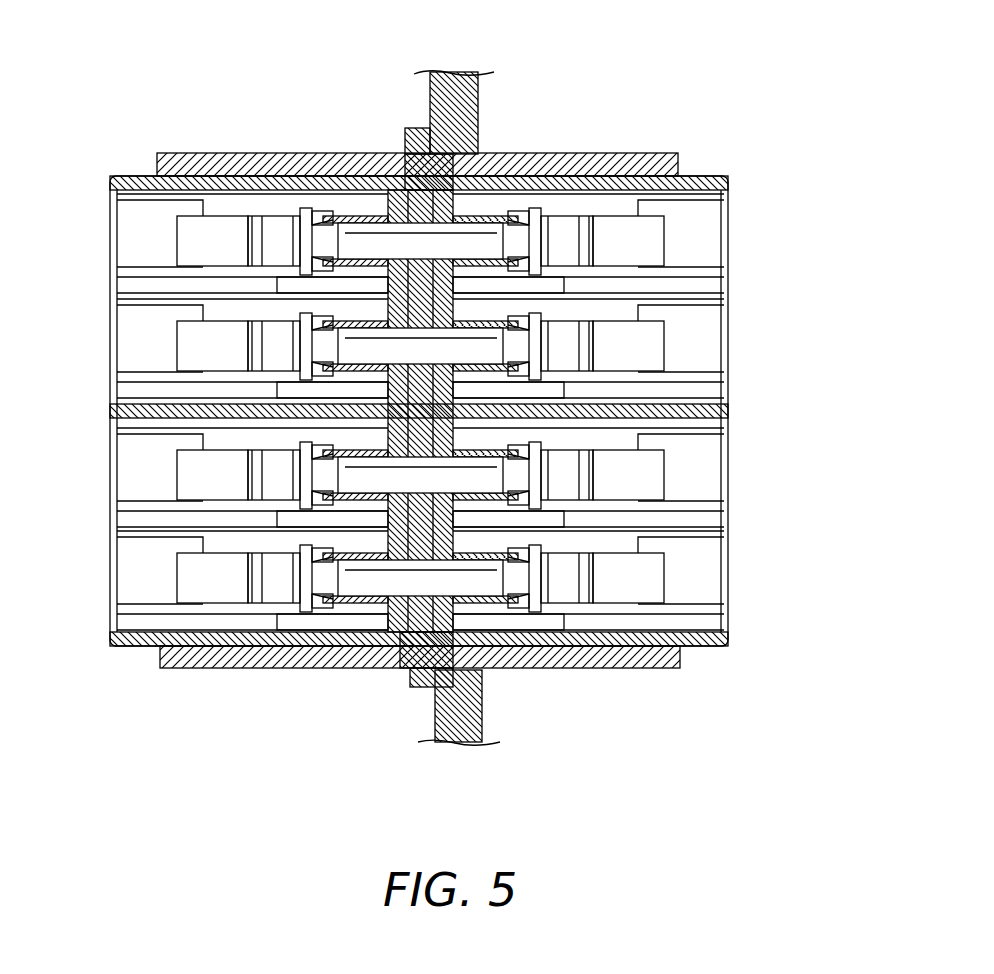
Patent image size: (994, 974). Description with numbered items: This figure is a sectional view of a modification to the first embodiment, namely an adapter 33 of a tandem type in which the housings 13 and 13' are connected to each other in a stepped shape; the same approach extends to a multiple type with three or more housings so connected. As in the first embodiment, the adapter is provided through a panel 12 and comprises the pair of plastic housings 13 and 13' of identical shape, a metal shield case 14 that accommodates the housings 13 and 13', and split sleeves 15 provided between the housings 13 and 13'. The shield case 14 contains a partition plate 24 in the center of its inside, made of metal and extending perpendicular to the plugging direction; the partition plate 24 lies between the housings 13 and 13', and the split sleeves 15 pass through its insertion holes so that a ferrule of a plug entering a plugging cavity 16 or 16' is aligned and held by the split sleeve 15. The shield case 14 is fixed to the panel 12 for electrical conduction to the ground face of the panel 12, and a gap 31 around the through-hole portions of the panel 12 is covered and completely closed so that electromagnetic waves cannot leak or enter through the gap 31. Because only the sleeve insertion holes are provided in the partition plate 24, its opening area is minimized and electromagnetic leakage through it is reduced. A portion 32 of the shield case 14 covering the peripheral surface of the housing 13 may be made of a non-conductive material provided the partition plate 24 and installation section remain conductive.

The adapter 33 is at (411, 386).
The housing 13 is at (94, 422).
The housing 13' is at (736, 406).
The shield case 14 is at (595, 142).
The portion for covering the peripheral surface of the housing 32 is at (588, 670).
The panel 12 is at (430, 97).
The gap 31 is at (468, 150).
The partition plate 24 is at (410, 192).
The plugging cavity 16 is at (209, 412).
The plugging cavity 16' is at (645, 412).
The split sleeve 15 is at (378, 588).